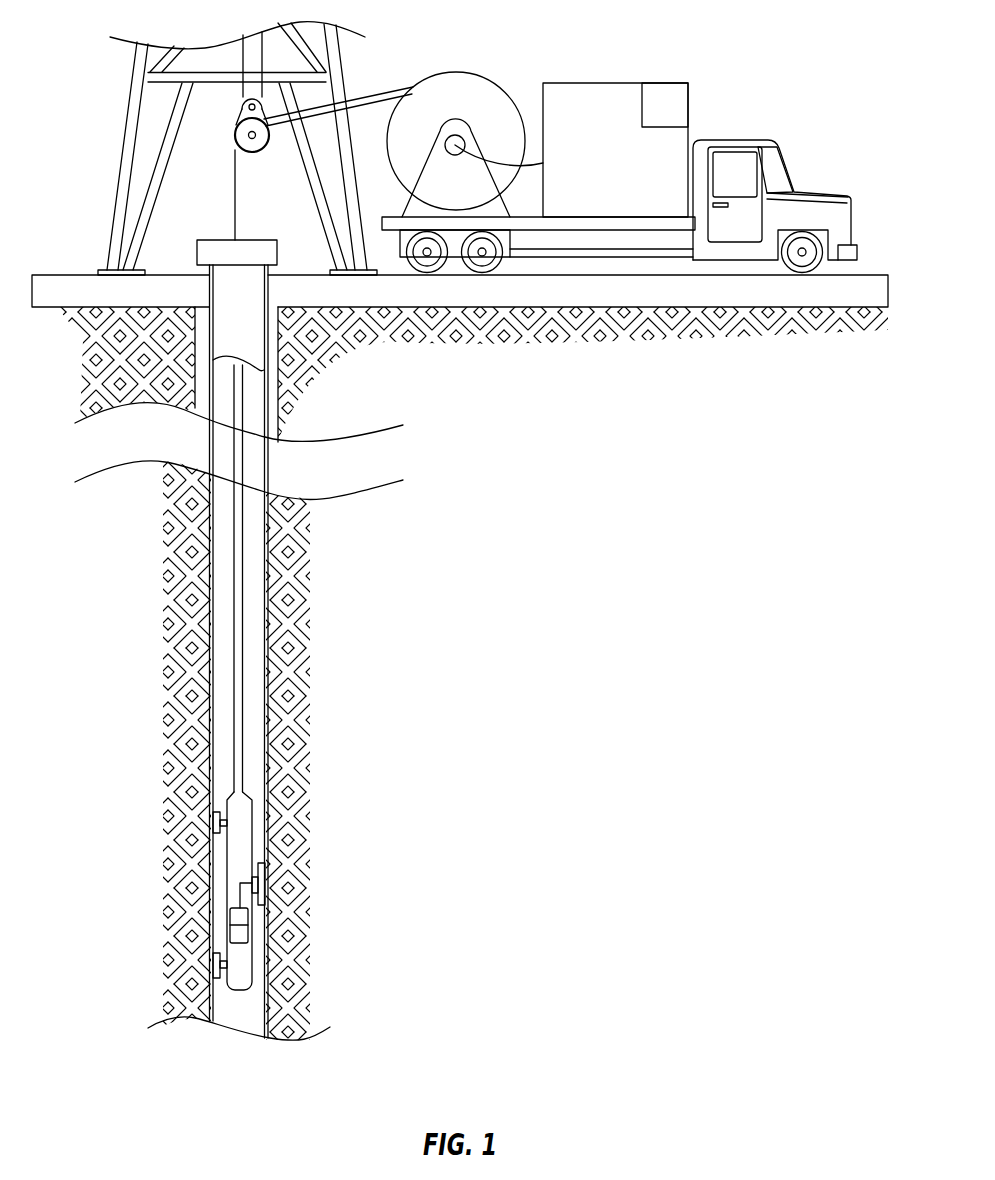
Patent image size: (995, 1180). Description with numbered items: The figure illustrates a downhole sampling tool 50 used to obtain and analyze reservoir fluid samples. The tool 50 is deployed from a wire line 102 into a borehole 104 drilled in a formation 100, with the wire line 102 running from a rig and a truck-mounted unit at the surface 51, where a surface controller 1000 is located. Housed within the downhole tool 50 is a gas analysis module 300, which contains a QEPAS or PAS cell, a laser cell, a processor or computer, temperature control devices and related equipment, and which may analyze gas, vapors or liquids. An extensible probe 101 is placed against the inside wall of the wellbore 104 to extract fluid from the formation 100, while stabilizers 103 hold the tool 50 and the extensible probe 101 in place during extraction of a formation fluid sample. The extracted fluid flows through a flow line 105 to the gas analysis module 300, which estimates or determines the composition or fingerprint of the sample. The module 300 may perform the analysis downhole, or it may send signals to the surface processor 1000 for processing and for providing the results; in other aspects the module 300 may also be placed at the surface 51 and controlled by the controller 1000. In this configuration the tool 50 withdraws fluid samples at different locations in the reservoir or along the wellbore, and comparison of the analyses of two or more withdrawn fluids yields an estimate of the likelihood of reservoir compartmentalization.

The surface 51 is at (283, 274).
The surface controller 1000 is at (593, 83).
The gas analysis module 300 is at (666, 83).
The wire line 102 is at (243, 605).
The borehole 104 is at (214, 678).
The formation 100 is at (273, 672).
The downhole sampling tool 50 is at (240, 837).
The extensible probe 101 is at (263, 871).
The stabilizers 103 is at (212, 824).
The flow line 105 is at (243, 883).